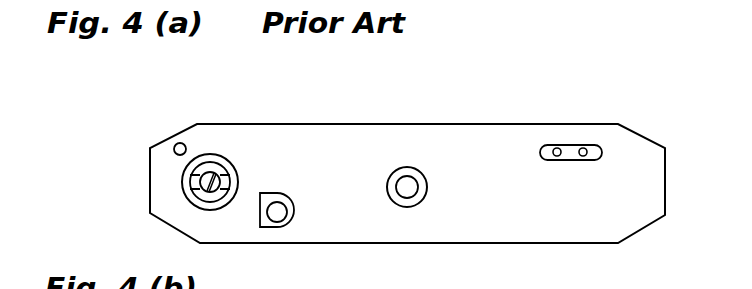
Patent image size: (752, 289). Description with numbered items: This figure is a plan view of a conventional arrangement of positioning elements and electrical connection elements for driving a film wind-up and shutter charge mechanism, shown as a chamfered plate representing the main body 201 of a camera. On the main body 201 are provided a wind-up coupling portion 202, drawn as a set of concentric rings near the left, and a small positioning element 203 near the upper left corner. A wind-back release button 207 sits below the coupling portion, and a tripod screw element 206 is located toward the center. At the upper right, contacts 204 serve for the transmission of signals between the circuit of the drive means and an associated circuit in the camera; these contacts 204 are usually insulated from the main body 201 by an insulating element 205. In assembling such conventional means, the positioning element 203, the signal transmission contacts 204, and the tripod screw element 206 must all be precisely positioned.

The main body 201 is at (468, 143).
The wind-up coupling portion 202 is at (220, 165).
The positioning element 203 is at (177, 144).
The contacts 204 is at (557, 148).
The insulating element 205 is at (578, 148).
The tripod screw element 206 is at (407, 200).
The wind-back release button 207 is at (277, 222).